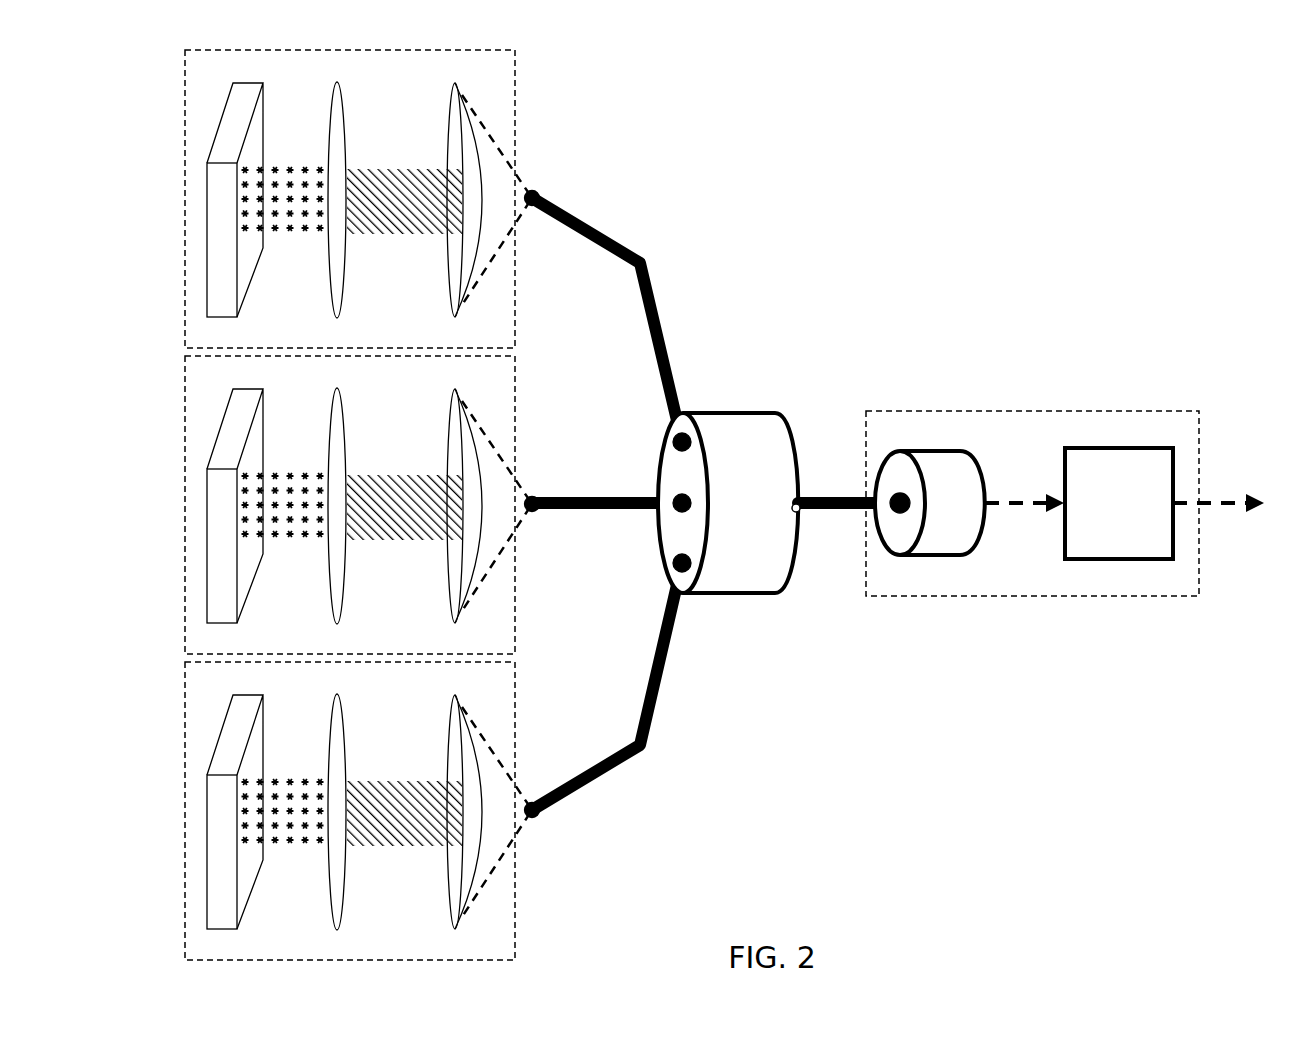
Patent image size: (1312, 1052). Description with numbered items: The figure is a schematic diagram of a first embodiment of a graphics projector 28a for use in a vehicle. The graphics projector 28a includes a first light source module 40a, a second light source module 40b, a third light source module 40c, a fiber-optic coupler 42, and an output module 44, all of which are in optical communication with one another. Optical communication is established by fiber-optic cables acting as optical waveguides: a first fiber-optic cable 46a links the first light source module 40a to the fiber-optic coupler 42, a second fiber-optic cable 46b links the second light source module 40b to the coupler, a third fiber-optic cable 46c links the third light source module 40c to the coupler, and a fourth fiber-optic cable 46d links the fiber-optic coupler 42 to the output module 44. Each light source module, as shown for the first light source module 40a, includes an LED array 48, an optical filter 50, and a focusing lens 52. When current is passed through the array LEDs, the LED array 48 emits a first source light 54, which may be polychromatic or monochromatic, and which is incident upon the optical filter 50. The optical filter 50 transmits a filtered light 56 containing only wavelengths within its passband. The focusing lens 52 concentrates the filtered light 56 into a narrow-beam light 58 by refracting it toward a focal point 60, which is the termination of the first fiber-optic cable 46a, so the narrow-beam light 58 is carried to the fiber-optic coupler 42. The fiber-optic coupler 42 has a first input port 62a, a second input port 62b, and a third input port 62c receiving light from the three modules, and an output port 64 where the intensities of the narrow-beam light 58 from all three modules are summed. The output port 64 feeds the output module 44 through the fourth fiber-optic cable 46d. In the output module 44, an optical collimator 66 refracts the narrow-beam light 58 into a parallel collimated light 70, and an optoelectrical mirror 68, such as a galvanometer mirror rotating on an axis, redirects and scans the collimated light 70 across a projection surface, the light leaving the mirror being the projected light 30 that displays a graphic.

The graphics projector 28a is at (985, 190).
The projected light 30 is at (1228, 505).
The first light source module 40a is at (323, 199).
The second light source module 40b is at (323, 505).
The third light source module 40c is at (324, 811).
The fiber-optic coupler 42 is at (733, 515).
The output module 44 is at (1155, 406).
The first fiber-optic cable 46a is at (655, 265).
The second fiber-optic cable 46b is at (594, 492).
The third fiber-optic cable 46c is at (660, 697).
The fourth fiber-optic cable 46d is at (852, 494).
The LED array 48 is at (257, 496).
The optical filter 50 is at (375, 506).
The focusing lens 52 is at (447, 516).
The first source light 54 is at (283, 531).
The filtered light 56 is at (404, 534).
The narrow-beam light 58 is at (497, 490).
The focal point 60 is at (532, 206).
The first input port 62a is at (668, 436).
The second input port 62b is at (677, 514).
The third input port 62c is at (690, 588).
The output port 64 is at (803, 520).
The optical collimator 66 is at (937, 515).
The optoelectrical mirror 68 is at (1105, 515).
The collimated light 70 is at (1018, 498).